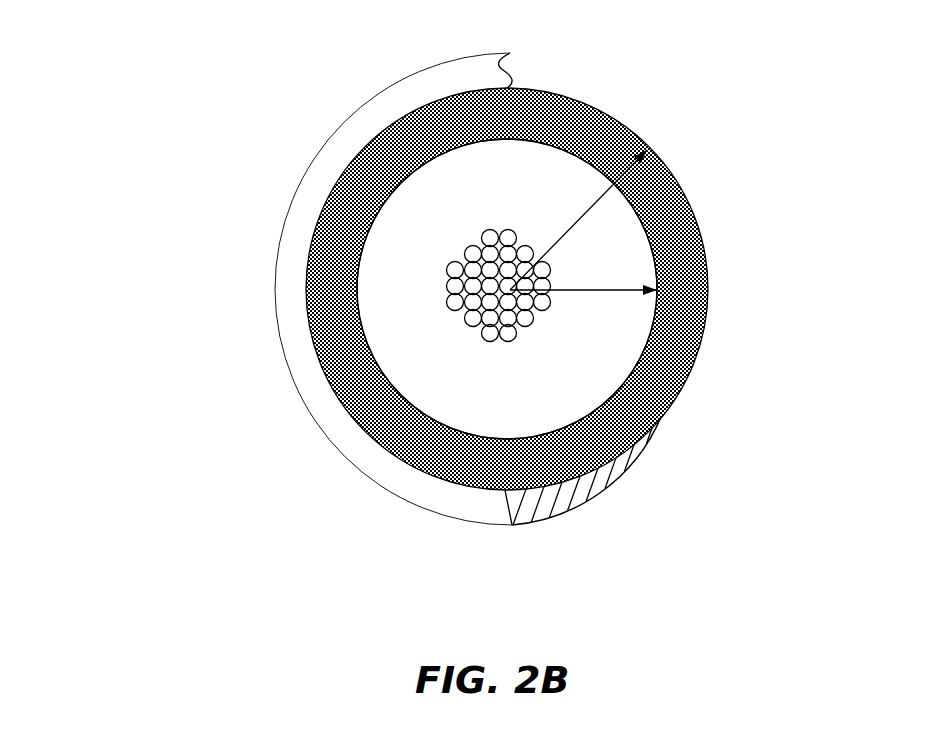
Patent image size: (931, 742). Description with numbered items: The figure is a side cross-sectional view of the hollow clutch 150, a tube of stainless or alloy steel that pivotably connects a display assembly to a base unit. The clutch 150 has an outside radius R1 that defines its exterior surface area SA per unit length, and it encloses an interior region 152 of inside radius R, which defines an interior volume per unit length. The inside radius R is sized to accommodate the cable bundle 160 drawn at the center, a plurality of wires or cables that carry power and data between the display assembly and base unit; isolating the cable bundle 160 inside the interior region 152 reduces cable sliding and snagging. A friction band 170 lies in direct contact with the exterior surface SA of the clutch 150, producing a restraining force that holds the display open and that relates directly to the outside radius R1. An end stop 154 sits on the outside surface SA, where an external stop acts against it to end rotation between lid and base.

The hollow clutch 150 is at (218, 86).
The interior region 152 is at (516, 405).
The end stop 154 is at (547, 500).
The cable bundle 160 is at (462, 245).
The friction band 170 is at (297, 320).
The exterior surface area SA is at (690, 203).
The inside radius R is at (584, 291).
The outside radius R1 is at (583, 212).